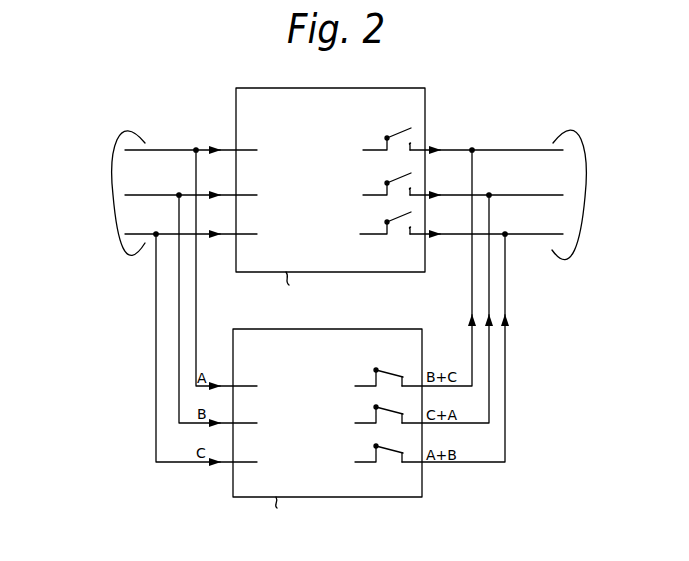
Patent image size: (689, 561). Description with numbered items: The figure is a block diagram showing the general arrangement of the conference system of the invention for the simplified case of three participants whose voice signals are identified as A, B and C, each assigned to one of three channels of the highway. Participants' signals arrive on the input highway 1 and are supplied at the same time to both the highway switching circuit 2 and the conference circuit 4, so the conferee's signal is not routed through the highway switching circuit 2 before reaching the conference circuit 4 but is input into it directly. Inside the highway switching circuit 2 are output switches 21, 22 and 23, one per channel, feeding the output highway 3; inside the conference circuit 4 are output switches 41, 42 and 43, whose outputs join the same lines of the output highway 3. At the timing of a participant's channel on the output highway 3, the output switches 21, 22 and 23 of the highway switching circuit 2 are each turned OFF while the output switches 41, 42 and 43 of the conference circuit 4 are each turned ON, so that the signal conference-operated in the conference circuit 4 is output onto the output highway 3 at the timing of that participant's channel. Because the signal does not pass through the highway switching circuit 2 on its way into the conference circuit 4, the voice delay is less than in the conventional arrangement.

The input highway 1 is at (145, 133).
The highway switching circuit 2 is at (409, 88).
The output highway 3 is at (564, 128).
The conference circuit 4 is at (424, 342).
The output switch 21 is at (372, 156).
The output switch 22 is at (372, 201).
The output switch 23 is at (372, 239).
The output switch 41 is at (359, 390).
The output switch 42 is at (359, 427).
The output switch 43 is at (359, 466).